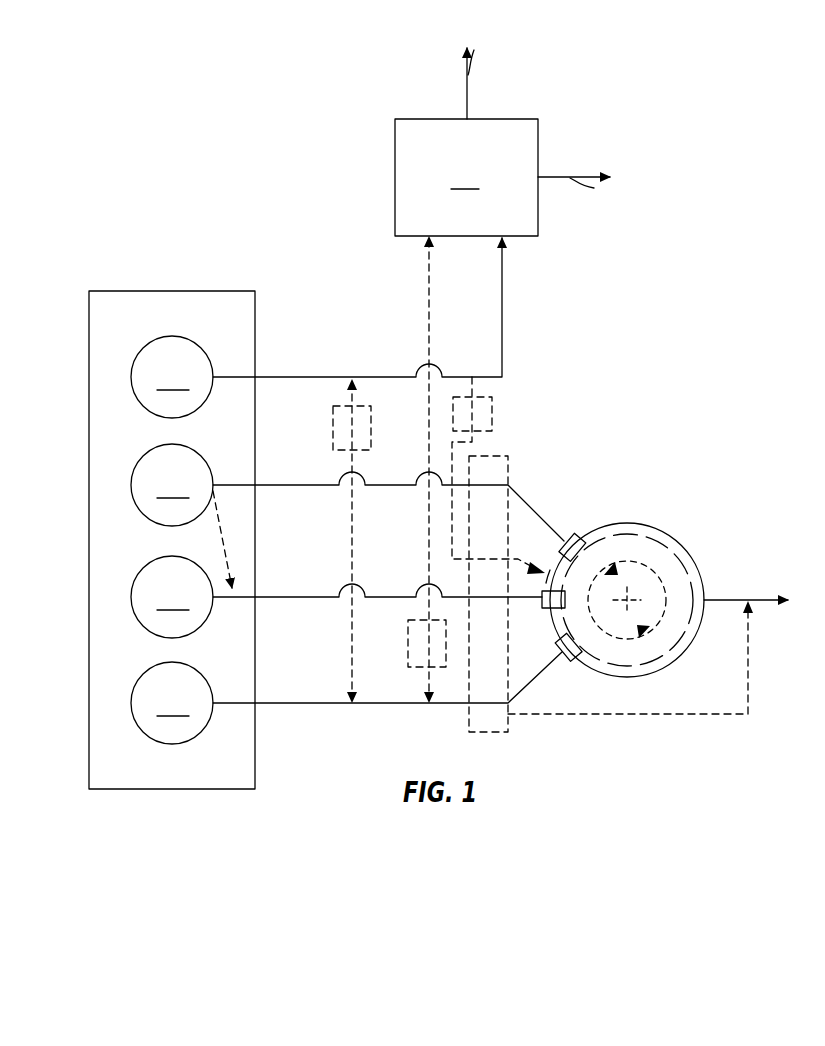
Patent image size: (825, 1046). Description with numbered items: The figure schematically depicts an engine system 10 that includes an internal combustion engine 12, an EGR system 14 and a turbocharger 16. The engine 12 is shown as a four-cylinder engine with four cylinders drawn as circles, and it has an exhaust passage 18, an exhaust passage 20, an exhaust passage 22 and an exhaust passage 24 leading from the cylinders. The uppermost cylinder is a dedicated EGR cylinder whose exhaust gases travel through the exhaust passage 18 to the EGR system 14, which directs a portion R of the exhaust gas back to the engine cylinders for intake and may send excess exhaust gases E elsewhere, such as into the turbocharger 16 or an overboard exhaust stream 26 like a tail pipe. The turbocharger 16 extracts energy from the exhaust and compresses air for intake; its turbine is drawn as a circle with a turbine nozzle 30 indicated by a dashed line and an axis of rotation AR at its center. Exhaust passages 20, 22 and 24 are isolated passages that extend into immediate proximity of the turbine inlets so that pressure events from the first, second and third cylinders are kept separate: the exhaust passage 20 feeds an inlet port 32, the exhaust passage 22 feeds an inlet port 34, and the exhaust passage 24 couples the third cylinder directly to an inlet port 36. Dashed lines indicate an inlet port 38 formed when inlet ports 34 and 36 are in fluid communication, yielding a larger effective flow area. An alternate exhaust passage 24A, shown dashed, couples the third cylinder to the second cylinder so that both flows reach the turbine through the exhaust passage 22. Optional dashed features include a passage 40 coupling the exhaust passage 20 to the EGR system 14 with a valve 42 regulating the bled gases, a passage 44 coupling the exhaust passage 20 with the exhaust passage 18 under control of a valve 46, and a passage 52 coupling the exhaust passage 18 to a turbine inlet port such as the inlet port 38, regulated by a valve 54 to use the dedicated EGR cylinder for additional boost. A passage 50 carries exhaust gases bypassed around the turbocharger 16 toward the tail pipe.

The engine system 10 is at (193, 182).
The internal combustion engine 12 is at (172, 291).
The EGR system 14 is at (502, 131).
The turbocharger 16 is at (700, 585).
The exhaust passage 18 is at (296, 377).
The exhaust passage 20 is at (270, 707).
The exhaust passage 22 is at (270, 601).
The exhaust passage 24 is at (270, 489).
The exhaust passage 24A is at (232, 565).
The overboard exhaust stream 26 is at (773, 598).
The turbine nozzle 30 is at (630, 528).
The inlet port 32 is at (565, 660).
The inlet port 34 is at (546, 608).
The inlet port 36 is at (570, 535).
The inlet port 38 is at (546, 578).
The passage 40 is at (429, 303).
The valve 42 is at (408, 660).
The passage 44 is at (352, 558).
The valve 46 is at (371, 441).
The passage 50 is at (625, 714).
The passage 52 is at (471, 396).
The valve 54 is at (492, 420).
The axis of rotation AR is at (634, 600).